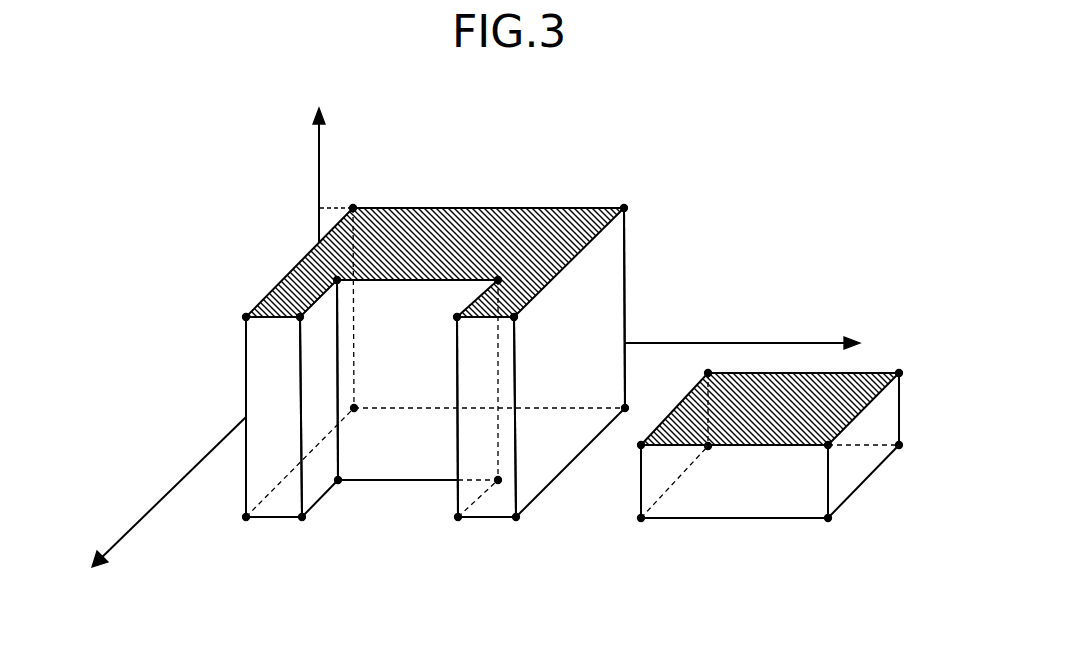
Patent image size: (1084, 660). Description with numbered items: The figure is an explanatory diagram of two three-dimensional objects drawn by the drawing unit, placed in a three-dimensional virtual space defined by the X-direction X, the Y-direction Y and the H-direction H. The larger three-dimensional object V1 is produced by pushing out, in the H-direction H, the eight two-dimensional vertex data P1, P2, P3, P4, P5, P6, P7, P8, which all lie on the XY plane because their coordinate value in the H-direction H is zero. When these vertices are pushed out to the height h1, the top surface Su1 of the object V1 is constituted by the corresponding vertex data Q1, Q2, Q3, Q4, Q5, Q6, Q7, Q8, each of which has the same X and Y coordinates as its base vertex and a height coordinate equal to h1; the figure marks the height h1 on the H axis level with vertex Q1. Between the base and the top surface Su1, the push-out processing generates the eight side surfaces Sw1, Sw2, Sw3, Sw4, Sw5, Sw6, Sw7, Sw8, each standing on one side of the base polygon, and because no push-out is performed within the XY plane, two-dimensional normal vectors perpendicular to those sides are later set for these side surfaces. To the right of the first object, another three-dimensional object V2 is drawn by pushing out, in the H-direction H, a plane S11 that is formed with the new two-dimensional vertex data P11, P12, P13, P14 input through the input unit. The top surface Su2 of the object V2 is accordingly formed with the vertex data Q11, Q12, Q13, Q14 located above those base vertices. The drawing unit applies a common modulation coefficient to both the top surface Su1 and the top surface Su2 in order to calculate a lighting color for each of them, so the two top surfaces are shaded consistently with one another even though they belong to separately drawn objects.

The three-dimensional object V1 is at (250, 172).
The three-dimensional object V2 is at (903, 332).
The H-direction H is at (318, 162).
The X-direction X is at (162, 505).
The Y-direction Y is at (751, 345).
The height h1 is at (320, 207).
The top surface Su1 is at (418, 216).
The top surface Su2 is at (778, 388).
The side surface Sw1 is at (604, 278).
The side surface Sw2 is at (607, 304).
The side surface Sw3 is at (490, 505).
The side surface Sw4 is at (476, 426).
The side surface Sw5 is at (382, 483).
The side surface Sw6 is at (332, 492).
The side surface Sw7 is at (272, 505).
The side surface Sw8 is at (258, 391).
The plane S11 is at (838, 478).
The vertex data Q1 is at (362, 197).
The vertex data Q2 is at (634, 197).
The vertex data Q3 is at (532, 324).
The vertex data Q4 is at (439, 324).
The vertex data Q5 is at (498, 277).
The vertex data Q6 is at (335, 279).
The vertex data Q7 is at (313, 328).
The vertex data Q8 is at (227, 319).
The vertex data P1 is at (366, 399).
The vertex data P2 is at (638, 412).
The vertex data P3 is at (512, 531).
The vertex data P4 is at (448, 531).
The vertex data P5 is at (483, 471).
The vertex data P6 is at (348, 494).
The vertex data P7 is at (299, 531).
The vertex data P8 is at (231, 531).
The vertex data Q11 is at (685, 366).
The vertex data Q12 is at (918, 365).
The vertex data Q13 is at (826, 448).
The vertex data Q14 is at (621, 457).
The two-dimensional vertex data P11 is at (727, 459).
The two-dimensional vertex data P12 is at (911, 459).
The two-dimensional vertex data P13 is at (833, 533).
The two-dimensional vertex data P14 is at (621, 532).